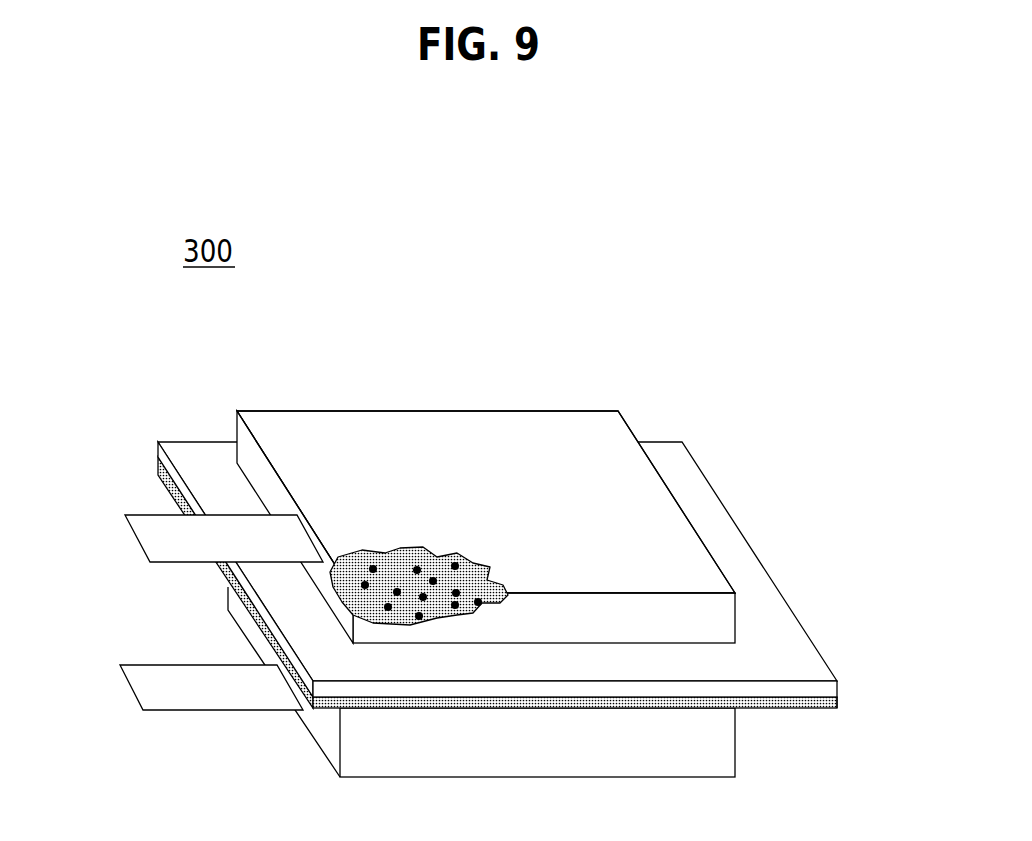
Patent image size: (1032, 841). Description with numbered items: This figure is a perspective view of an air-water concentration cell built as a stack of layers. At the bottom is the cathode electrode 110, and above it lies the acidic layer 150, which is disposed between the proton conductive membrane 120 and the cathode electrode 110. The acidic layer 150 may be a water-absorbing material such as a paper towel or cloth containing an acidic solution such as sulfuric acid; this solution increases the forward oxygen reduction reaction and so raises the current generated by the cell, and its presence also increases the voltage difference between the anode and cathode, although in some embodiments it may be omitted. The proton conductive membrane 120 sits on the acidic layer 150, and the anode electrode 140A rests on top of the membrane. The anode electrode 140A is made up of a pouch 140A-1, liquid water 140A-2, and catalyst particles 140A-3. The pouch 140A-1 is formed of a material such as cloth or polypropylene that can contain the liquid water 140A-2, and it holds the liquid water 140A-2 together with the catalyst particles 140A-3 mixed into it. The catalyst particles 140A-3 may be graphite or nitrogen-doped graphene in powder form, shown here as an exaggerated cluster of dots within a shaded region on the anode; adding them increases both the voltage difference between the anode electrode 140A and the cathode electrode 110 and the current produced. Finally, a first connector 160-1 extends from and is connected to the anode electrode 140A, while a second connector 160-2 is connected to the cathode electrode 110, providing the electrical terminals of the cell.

The cathode electrode 110 is at (735, 767).
The proton conductive membrane 120 is at (735, 525).
The acidic layer 150 is at (837, 705).
The anode electrode 140A is at (592, 487).
The pouch 140A-1 is at (433, 411).
The liquid water 140A-2 is at (404, 575).
The catalyst particles 140A-3 is at (432, 581).
The first connector 160-1 is at (135, 538).
The second connector 160-2 is at (133, 695).